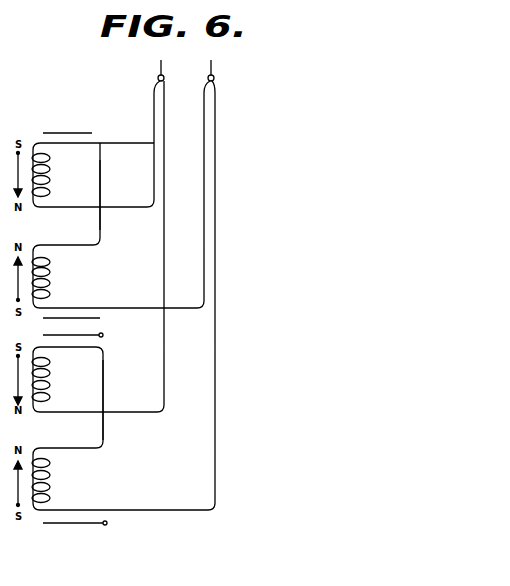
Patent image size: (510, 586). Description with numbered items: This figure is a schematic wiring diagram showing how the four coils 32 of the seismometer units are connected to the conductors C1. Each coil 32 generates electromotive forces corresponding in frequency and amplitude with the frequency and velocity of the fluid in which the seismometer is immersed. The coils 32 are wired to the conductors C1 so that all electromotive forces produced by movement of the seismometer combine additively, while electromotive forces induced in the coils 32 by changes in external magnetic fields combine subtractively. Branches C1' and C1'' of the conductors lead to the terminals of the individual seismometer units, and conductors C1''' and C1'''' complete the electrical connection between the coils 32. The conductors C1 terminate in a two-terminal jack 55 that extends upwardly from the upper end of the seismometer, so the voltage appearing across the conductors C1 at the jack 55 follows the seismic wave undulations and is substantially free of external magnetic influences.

The two-terminal jack 55 is at (152, 73).
The coil 32 is at (50, 178).
The conductors C1 is at (178, 86).
The conductor branch C1' is at (147, 194).
The conductor branch C1'' is at (148, 311).
The conductor C1''' is at (120, 195).
The conductor C1'''' is at (125, 405).